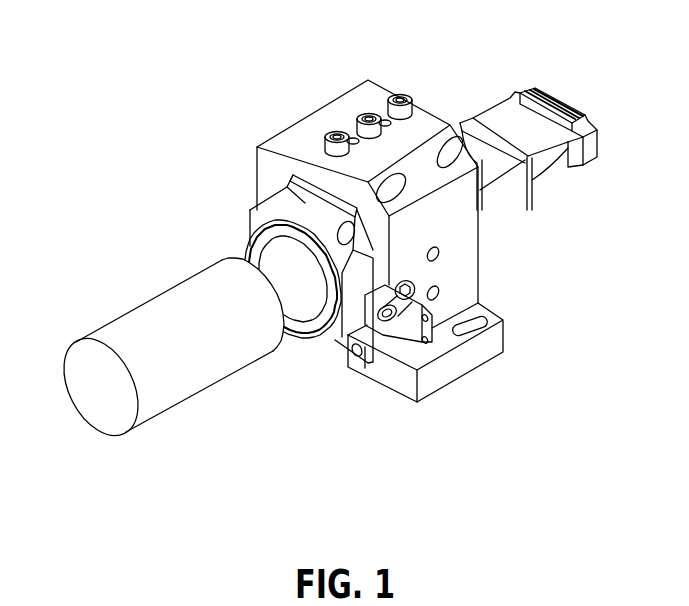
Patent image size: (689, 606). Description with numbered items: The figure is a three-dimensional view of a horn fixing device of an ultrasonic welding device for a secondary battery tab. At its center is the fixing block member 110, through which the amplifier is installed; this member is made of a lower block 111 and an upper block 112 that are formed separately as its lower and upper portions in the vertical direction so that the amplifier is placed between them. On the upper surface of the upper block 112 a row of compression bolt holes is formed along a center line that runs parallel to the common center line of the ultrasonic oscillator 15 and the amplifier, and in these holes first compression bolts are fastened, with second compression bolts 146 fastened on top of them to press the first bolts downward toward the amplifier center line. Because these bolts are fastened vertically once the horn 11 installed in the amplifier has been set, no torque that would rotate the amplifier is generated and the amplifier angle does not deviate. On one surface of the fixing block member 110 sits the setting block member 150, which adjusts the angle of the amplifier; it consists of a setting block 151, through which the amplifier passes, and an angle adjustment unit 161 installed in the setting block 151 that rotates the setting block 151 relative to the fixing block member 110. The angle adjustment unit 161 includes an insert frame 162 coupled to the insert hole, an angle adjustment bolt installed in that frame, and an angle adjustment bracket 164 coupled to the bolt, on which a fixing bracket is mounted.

The horn 11 is at (597, 143).
The ultrasonic oscillator 15 is at (147, 333).
The fixing block member 110 is at (483, 242).
The lower block 111 is at (463, 288).
The upper block 112 is at (277, 150).
The second compression bolts 146 is at (430, 32).
The setting block member 150 is at (240, 204).
The setting block 151 is at (247, 223).
The angle adjustment unit 161 is at (390, 343).
The insert frame 162 is at (353, 354).
The angle adjustment bracket 164 is at (430, 353).